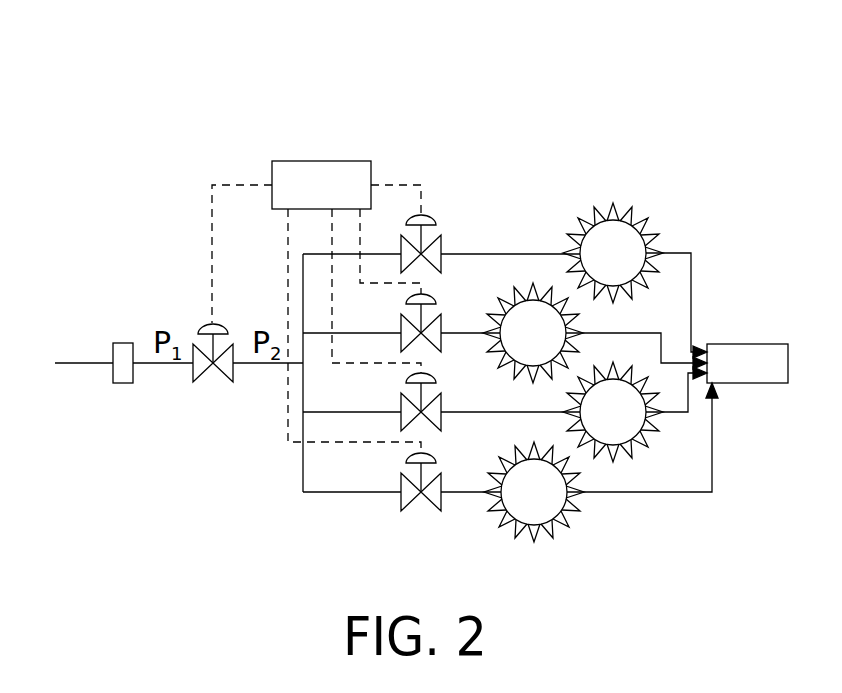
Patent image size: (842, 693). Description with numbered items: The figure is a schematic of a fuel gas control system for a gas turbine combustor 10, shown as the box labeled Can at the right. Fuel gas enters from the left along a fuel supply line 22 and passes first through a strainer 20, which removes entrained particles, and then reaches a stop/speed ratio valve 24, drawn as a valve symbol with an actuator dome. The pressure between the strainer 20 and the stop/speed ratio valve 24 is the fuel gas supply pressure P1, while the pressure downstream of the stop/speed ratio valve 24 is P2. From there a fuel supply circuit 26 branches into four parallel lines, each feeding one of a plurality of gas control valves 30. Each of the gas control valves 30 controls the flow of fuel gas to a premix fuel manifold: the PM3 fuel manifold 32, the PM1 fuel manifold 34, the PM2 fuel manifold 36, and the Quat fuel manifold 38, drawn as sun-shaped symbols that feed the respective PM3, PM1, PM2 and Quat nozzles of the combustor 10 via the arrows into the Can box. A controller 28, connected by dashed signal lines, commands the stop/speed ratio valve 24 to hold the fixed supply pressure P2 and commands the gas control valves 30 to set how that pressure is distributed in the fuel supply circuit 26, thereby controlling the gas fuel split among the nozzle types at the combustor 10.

The combustor 10 is at (740, 342).
The strainer 20 is at (113, 342).
The fuel supply line 22 is at (102, 365).
The stop/speed ratio valve 24 is at (192, 370).
The fuel supply circuit 26 is at (252, 365).
The controller 28 is at (332, 160).
The gas control valves 30 is at (442, 487).
The PM3 fuel manifold 32 is at (618, 215).
The PM1 fuel manifold 34 is at (545, 297).
The PM2 fuel manifold 36 is at (632, 373).
The Quat fuel manifold 38 is at (553, 525).